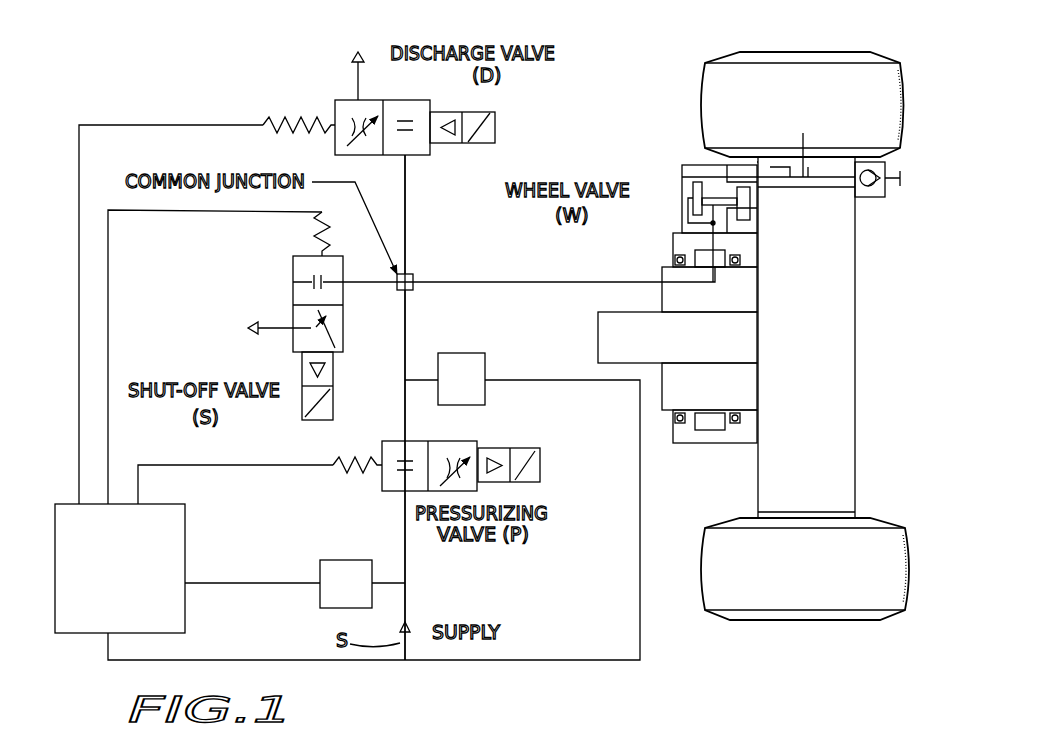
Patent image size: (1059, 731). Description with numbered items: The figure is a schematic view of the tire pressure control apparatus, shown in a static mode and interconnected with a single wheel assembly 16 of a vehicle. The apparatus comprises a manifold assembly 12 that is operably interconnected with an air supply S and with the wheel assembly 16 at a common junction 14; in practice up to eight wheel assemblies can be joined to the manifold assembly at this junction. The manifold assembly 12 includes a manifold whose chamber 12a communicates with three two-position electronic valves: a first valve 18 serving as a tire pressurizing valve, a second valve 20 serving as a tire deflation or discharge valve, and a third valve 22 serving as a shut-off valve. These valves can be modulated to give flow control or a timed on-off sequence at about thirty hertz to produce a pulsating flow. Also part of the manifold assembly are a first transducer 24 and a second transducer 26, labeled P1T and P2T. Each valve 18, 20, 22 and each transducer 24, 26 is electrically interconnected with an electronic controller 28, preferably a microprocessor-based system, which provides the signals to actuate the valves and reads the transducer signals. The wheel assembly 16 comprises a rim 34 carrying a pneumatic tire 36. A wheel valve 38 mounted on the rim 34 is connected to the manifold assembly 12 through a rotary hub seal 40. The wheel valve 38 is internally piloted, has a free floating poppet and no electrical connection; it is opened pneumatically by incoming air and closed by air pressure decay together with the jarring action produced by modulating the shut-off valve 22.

The manifold assembly 12 is at (446, 270).
The chamber of the manifold 12a is at (413, 274).
The common junction 14 is at (413, 290).
The wheel assembly 16 is at (805, 336).
The tire pressurizing valve 18 is at (543, 460).
The tire deflation valve 20 is at (333, 100).
The shut-off valve 22 is at (290, 281).
The first transducer 24 is at (488, 370).
The second transducer 26 is at (346, 560).
The electronic controller 28 is at (178, 536).
The rim 34 is at (830, 402).
The pneumatic tire 36 is at (802, 104).
The wheel valve 38 is at (680, 165).
The rotary hub seal 40 is at (745, 296).